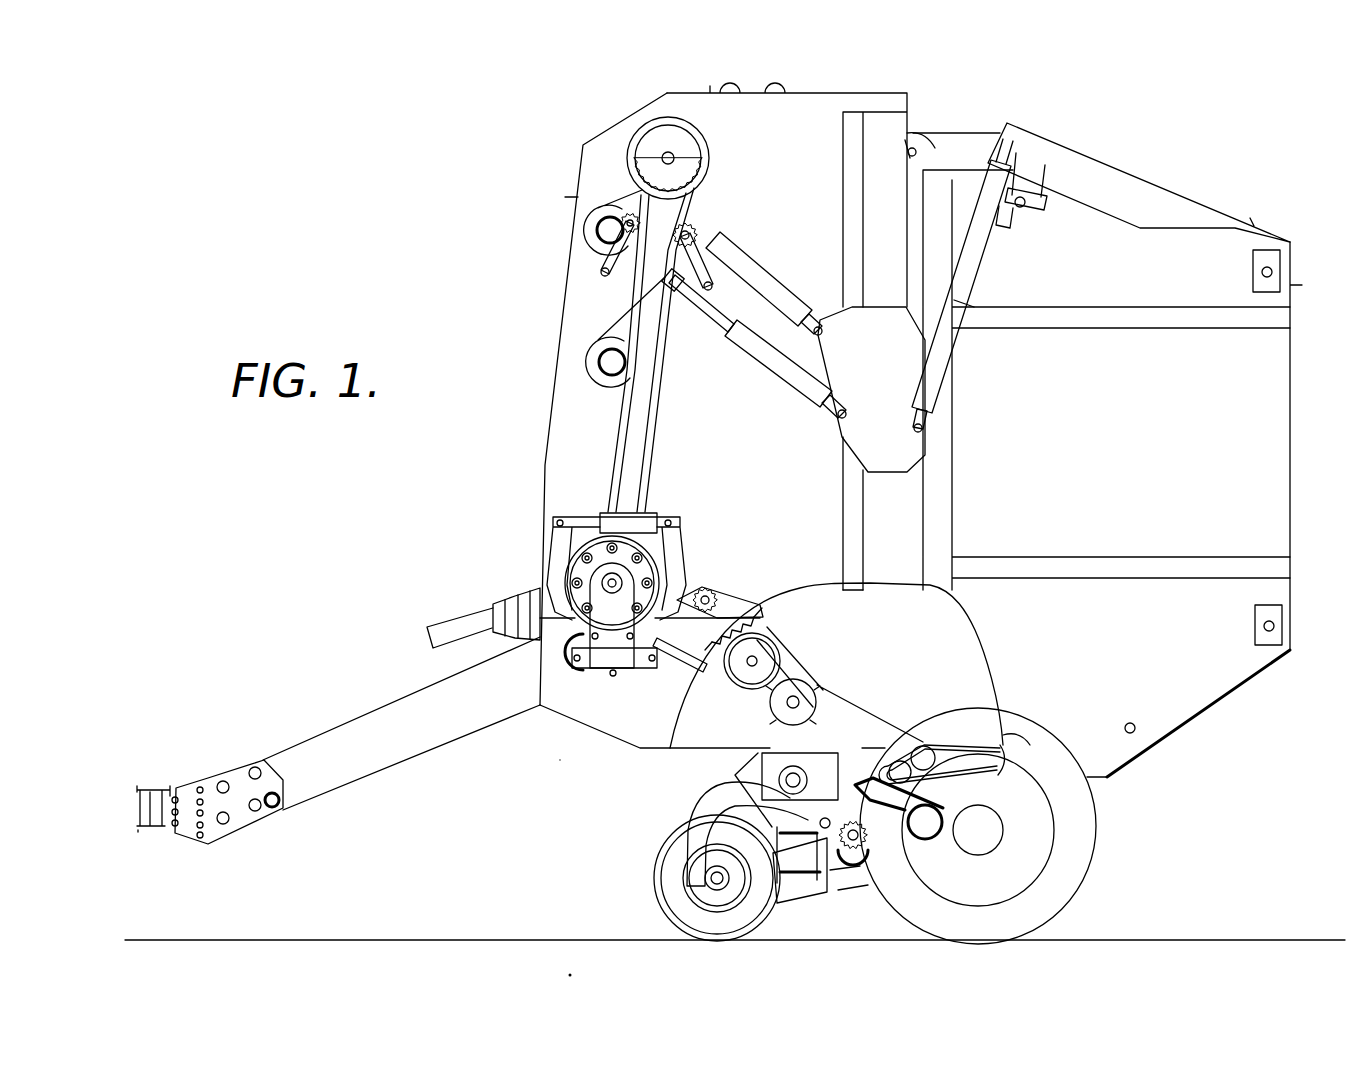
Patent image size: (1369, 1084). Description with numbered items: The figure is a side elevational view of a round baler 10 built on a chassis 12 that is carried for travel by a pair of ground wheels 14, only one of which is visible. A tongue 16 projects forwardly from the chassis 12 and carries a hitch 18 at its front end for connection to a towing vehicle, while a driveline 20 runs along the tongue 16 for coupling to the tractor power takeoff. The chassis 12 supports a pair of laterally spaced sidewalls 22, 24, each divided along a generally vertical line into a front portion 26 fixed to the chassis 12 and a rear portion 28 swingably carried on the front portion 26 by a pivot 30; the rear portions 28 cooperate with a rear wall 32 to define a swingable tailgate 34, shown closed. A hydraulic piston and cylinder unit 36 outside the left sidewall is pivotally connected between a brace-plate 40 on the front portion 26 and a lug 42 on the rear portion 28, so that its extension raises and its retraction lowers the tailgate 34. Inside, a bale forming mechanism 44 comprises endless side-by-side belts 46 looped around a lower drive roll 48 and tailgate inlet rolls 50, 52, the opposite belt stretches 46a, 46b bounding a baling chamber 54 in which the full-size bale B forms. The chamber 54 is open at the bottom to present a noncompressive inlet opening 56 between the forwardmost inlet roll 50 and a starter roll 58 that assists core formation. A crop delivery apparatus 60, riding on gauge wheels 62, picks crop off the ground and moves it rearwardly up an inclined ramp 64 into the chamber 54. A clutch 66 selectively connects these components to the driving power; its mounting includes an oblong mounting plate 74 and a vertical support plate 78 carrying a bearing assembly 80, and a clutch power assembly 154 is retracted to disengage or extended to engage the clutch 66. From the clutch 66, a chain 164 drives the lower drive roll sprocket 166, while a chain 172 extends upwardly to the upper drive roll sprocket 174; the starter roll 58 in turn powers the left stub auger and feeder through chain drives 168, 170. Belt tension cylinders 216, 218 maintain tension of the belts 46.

The round baler 10 is at (548, 246).
The chassis 12 is at (843, 868).
The ground wheels 14 is at (1085, 845).
The tongue 16 is at (385, 757).
The hitch 18 is at (143, 835).
The driveline 20 is at (447, 627).
The left sidewall 22 is at (543, 456).
The right sidewall 24 is at (680, 744).
The front sidewall portion 26 is at (787, 336).
The rear sidewall portion 28 is at (1101, 361).
The pivot 30 is at (918, 150).
The rear wall 32 is at (1292, 393).
The tailgate 34 is at (1215, 197).
The hydraulic piston and cylinder unit 36 is at (968, 338).
The brace-plate 40 is at (893, 455).
The lug 42 is at (1040, 190).
The bale forming mechanism 44 is at (795, 655).
The belts 46 is at (1000, 752).
The belt stretch 46a is at (787, 643).
The belt stretch 46b is at (1010, 735).
The lower drive roll 48 is at (700, 688).
The forwardmost tailgate inlet roll 50 is at (930, 782).
The tailgate inlet roll 52 is at (935, 758).
The baling chamber 54 is at (898, 580).
The chamber inlet opening 56 is at (862, 742).
The starter roll 58 is at (805, 696).
The crop delivery apparatus 60 is at (745, 770).
The gauge wheels 62 is at (668, 898).
The ramp 64 is at (896, 768).
The clutch 66 is at (692, 530).
The oblong mounting plate 74 is at (557, 663).
The vertical support plate 78 is at (612, 670).
The bearing assembly 80 is at (605, 584).
The clutch power assembly 154 is at (650, 513).
The chain 164 is at (718, 590).
The lower drive roll sprocket 166 is at (762, 602).
The chain drive 168 is at (757, 748).
The chain drive 170 is at (905, 868).
The chain 172 is at (651, 438).
The upper drive roll sprocket 174 is at (682, 148).
The belt tension cylinder 216 is at (770, 370).
The belt tension cylinder 218 is at (780, 292).
The bale B is at (965, 630).